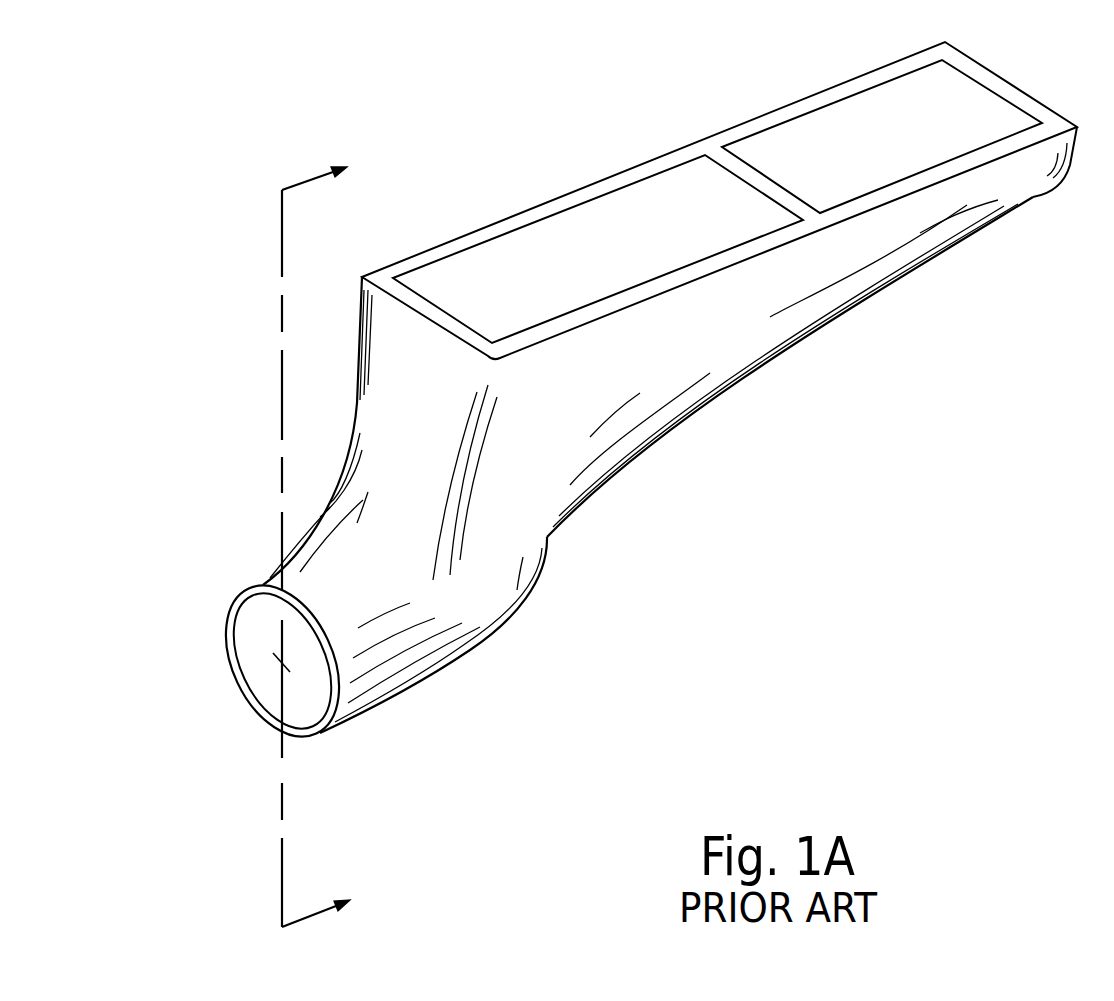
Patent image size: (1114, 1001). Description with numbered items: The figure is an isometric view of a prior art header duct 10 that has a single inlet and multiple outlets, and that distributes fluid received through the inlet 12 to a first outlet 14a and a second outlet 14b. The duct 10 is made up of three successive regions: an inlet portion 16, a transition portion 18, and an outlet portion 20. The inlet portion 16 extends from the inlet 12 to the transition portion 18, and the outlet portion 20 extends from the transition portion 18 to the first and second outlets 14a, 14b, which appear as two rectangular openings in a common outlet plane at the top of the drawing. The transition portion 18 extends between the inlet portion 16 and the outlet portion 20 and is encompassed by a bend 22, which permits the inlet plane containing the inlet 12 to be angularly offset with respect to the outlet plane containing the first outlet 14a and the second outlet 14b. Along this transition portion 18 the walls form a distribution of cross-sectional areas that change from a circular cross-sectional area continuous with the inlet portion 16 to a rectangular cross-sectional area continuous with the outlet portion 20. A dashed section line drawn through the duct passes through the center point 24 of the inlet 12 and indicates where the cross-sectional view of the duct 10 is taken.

The duct 10 is at (282, 106).
The inlet 12 is at (202, 596).
The first outlet 14a is at (536, 182).
The second outlet 14b is at (765, 90).
The inlet portion 16 is at (448, 718).
The transition portion 18 is at (730, 484).
The outlet portion 20 is at (608, 90).
The bend 22 is at (387, 477).
The center point 24 is at (280, 663).